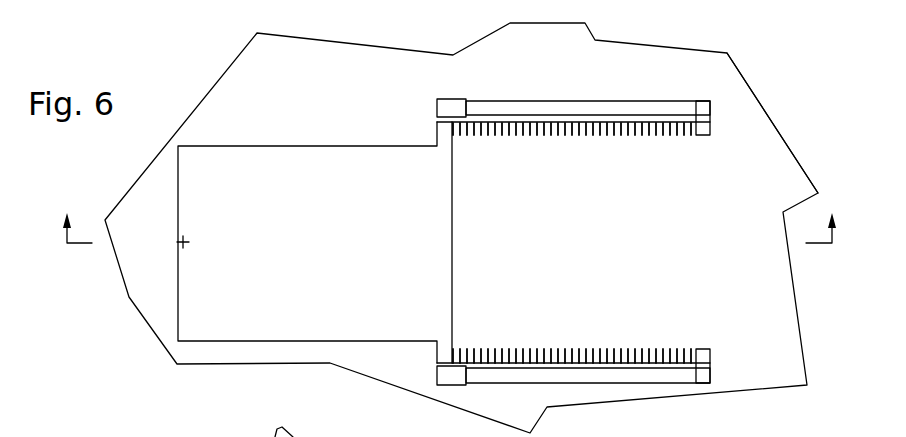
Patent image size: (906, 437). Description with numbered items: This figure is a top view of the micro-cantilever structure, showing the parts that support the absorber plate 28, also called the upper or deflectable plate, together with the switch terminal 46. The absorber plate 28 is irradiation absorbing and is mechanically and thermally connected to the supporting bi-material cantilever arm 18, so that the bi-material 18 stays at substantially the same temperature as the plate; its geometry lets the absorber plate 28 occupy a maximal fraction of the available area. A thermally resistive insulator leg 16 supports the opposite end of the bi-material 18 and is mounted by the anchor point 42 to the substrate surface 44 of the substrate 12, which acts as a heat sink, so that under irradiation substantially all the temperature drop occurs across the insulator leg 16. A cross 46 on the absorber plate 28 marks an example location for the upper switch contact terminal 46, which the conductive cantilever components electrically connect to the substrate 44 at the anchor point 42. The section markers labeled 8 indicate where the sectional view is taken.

The substrate 12 is at (245, 54).
The substrate surface 44 is at (778, 142).
The absorber plate 28 is at (308, 337).
The upper switch contact terminal 46 is at (185, 245).
The anchor point 42 is at (457, 108).
The insulator leg 16 is at (583, 102).
The bi-material cantilever arm 18 is at (593, 137).
The section line 8- 8 is at (451, 216).